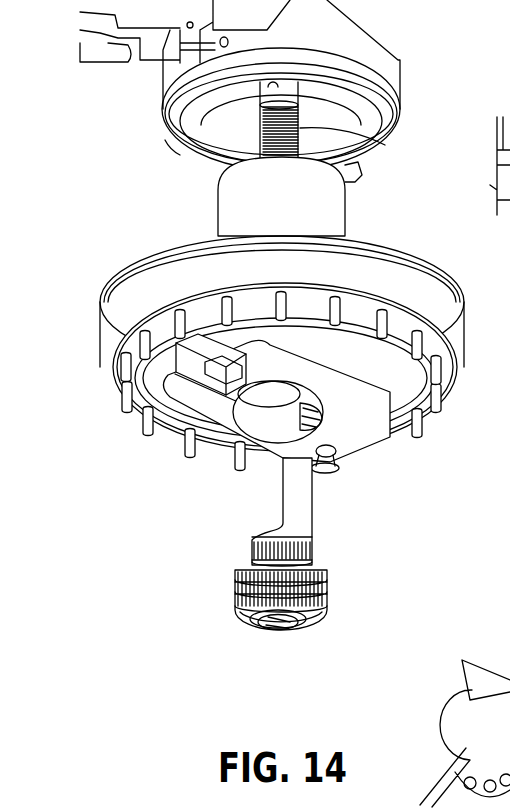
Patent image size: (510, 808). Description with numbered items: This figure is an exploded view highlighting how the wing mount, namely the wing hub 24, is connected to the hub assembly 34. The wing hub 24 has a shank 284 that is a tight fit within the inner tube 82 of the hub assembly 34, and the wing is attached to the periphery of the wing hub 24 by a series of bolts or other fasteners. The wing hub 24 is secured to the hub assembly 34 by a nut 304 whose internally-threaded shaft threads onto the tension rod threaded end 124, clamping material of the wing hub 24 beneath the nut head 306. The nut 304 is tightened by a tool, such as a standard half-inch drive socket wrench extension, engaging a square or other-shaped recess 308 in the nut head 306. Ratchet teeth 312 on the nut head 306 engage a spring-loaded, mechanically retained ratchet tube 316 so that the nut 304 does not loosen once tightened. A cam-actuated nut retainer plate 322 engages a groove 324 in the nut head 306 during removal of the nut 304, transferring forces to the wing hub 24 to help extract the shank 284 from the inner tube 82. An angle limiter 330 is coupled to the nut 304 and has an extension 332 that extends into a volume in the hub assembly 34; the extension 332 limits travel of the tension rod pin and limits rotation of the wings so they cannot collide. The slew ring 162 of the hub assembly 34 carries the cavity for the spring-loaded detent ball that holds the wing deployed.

The hub assembly 34 is at (261, 85).
The slew ring 162 is at (400, 58).
The inner tube 82 is at (165, 140).
The tension rod threaded end 124 is at (343, 163).
The shank 284 is at (347, 206).
The wing hub 24 is at (253, 354).
The cam-actuated nut retainer plate 322 is at (148, 410).
The ratchet tube 316 is at (335, 468).
The extension 332 is at (310, 505).
The angle limiter 330 is at (310, 540).
The ratchet teeth 312 is at (325, 577).
The groove 324 is at (240, 574).
The nut head 306 is at (236, 603).
The recess 308 is at (277, 630).
The nut 304 is at (276, 622).